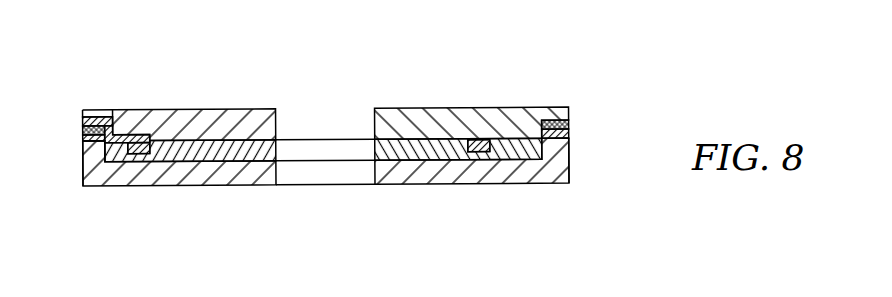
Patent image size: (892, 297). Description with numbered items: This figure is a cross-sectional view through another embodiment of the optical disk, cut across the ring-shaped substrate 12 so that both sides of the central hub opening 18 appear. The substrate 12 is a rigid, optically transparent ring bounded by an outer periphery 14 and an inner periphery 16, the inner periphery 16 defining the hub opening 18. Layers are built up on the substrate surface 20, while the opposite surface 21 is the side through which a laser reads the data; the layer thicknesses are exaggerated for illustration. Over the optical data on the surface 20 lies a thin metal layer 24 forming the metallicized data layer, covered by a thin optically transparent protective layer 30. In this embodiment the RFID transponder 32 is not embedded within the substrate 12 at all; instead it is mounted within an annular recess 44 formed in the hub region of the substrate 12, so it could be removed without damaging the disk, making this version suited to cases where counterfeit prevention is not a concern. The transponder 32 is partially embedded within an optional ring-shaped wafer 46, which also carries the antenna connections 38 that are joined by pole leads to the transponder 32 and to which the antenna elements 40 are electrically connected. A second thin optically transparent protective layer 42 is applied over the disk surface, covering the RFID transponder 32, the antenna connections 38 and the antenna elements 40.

The substrate 12 is at (517, 173).
The outer periphery 14 is at (569, 144).
The inner periphery 16 is at (372, 183).
The hub opening 18 is at (327, 128).
The surface 20 is at (83, 169).
The opposite surface 21 is at (217, 188).
The metal layer 24 is at (83, 141).
The protective layer 30 is at (83, 127).
The RFID transponder 32 is at (482, 154).
The antenna connections 38 is at (143, 155).
The antenna elements 40 is at (98, 117).
The second protective layer 42 is at (154, 118).
The annular recess 44 is at (105, 163).
The wafer 46 is at (262, 153).